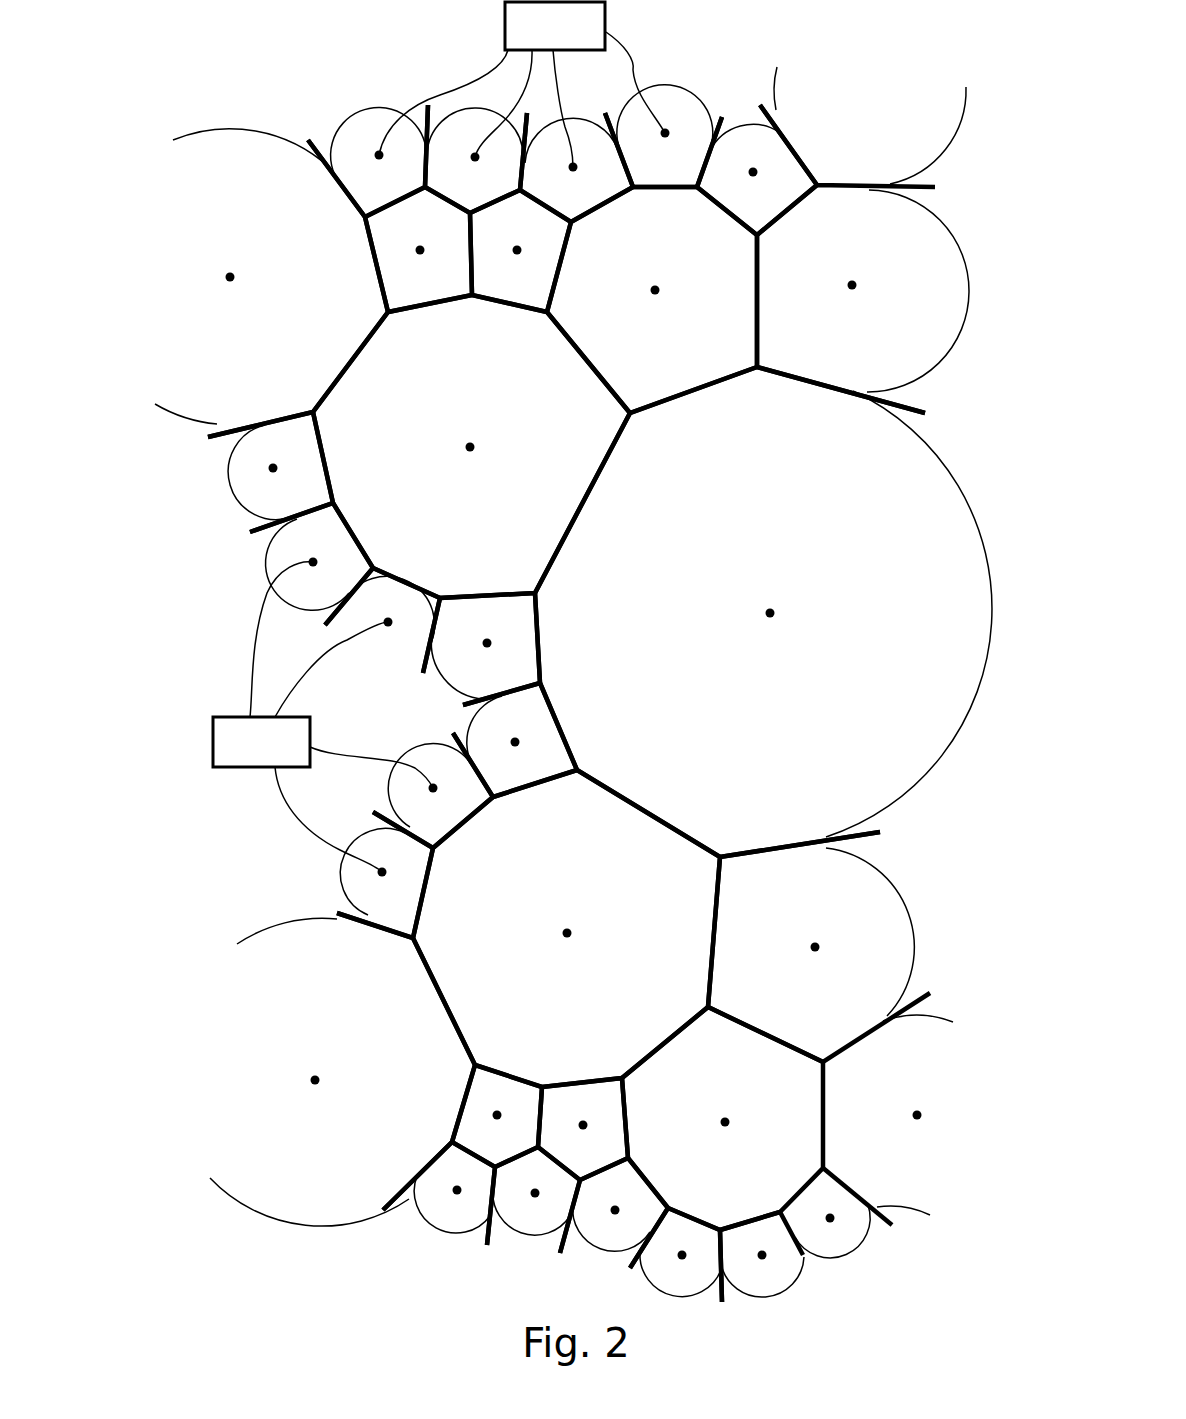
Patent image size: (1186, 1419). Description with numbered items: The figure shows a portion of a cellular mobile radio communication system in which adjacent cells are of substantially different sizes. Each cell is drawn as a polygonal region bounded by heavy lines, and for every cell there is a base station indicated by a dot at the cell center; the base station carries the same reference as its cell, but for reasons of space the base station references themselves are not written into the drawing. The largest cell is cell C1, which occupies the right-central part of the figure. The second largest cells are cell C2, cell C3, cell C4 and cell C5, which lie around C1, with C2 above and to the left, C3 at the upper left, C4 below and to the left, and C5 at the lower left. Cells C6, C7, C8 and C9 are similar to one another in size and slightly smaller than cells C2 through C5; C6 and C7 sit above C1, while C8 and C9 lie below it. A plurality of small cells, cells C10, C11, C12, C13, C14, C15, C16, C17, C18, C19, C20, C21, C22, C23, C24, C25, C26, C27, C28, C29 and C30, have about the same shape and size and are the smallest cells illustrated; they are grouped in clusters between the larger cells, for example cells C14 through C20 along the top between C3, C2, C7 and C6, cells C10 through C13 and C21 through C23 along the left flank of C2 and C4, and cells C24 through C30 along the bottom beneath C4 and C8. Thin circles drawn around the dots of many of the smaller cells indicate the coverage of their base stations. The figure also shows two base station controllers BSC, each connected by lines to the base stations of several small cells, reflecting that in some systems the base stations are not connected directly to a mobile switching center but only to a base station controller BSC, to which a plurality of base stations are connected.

The base station controller BSC is at (439, 437).
The cell C1 is at (758, 663).
The cell C2 is at (458, 495).
The cell C3 is at (216, 323).
The cell C4 is at (554, 980).
The cell C5 is at (301, 1127).
The cell C6 is at (839, 333).
The cell C7 is at (641, 336).
The cell C8 is at (722, 1118).
The cell C9 is at (819, 947).
The cell C10 is at (467, 679).
The cell C11 is at (368, 655).
The cell C12 is at (295, 595).
The cell C13 is at (255, 502).
The cell C14 is at (418, 249).
The cell C15 is at (520, 251).
The cell C16 is at (368, 161).
The cell C17 is at (476, 159).
The cell C18 is at (576, 167).
The cell C19 is at (663, 136).
The cell C20 is at (757, 170).
The cell C21 is at (515, 740).
The cell C22 is at (433, 790).
The cell C23 is at (385, 875).
The cell C24 is at (497, 1116).
The cell C25 is at (583, 1129).
The cell C26 is at (439, 1193).
The cell C27 is at (533, 1200).
The cell C28 is at (614, 1213).
The cell C29 is at (676, 1255).
The cell C30 is at (762, 1257).